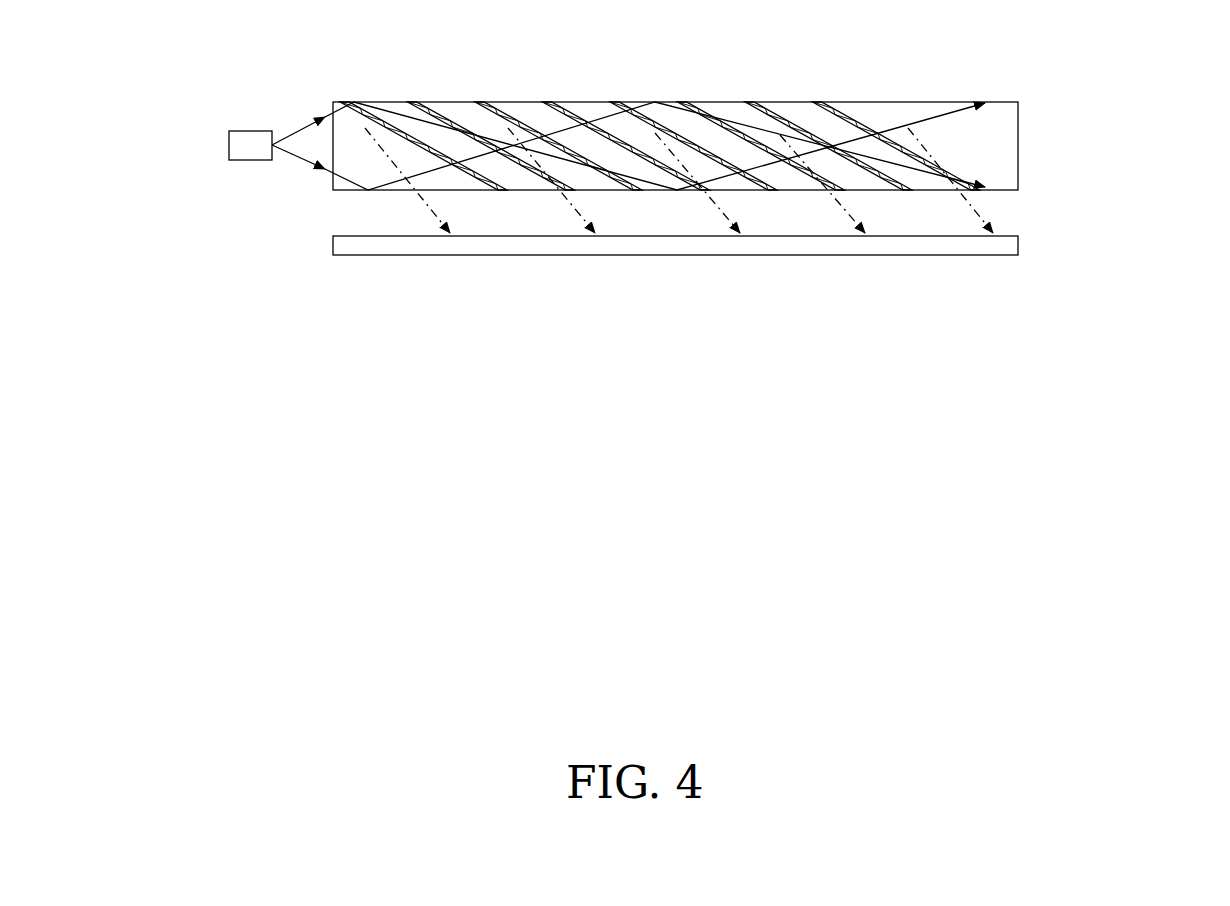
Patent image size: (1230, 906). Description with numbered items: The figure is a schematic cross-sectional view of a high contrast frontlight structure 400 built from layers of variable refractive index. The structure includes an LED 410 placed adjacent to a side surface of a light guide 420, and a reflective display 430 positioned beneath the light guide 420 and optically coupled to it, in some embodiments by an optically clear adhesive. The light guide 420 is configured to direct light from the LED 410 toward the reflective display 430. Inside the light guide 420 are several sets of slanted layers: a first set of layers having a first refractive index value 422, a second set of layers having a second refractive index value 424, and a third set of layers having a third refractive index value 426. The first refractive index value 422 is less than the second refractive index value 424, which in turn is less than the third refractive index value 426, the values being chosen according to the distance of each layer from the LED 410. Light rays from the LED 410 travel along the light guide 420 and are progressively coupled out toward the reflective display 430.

The high contrast frontlight structure 400 is at (1107, 73).
The LED 410 is at (229, 144).
The light guide 420 is at (1018, 143).
The first set of layers having a first refractive index value 422 is at (343, 102).
The second set of layers having a second refractive index value 424 is at (610, 100).
The third set of layers having a third refractive index value 426 is at (747, 100).
The reflective display 430 is at (1018, 237).